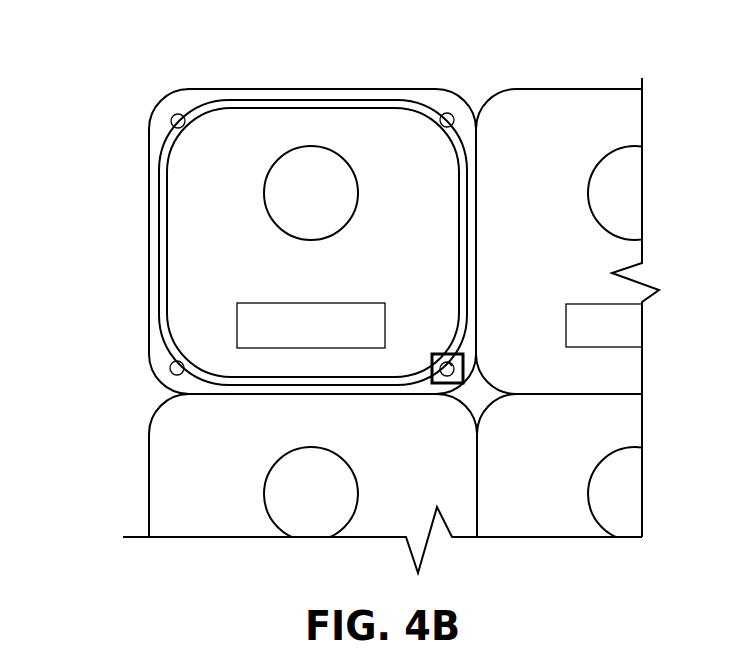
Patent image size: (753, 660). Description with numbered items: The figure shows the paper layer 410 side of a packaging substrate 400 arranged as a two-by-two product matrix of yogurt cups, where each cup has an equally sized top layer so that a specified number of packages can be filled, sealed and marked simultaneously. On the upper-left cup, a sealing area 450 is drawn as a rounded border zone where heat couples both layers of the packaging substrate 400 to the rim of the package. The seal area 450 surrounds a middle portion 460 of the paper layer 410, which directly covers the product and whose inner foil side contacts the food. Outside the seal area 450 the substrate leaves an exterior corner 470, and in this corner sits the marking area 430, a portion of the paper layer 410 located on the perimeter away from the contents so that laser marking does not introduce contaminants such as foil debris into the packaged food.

The packaging substrate 400 is at (104, 243).
The paper layer 410 is at (577, 95).
The marking area 430 is at (455, 352).
The sealing area 450 is at (177, 145).
The middle portion 460 is at (390, 247).
The exterior corner 470 is at (205, 92).